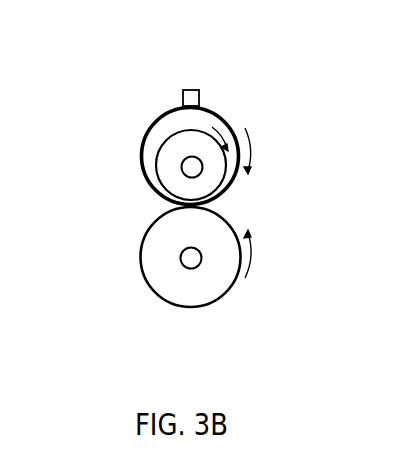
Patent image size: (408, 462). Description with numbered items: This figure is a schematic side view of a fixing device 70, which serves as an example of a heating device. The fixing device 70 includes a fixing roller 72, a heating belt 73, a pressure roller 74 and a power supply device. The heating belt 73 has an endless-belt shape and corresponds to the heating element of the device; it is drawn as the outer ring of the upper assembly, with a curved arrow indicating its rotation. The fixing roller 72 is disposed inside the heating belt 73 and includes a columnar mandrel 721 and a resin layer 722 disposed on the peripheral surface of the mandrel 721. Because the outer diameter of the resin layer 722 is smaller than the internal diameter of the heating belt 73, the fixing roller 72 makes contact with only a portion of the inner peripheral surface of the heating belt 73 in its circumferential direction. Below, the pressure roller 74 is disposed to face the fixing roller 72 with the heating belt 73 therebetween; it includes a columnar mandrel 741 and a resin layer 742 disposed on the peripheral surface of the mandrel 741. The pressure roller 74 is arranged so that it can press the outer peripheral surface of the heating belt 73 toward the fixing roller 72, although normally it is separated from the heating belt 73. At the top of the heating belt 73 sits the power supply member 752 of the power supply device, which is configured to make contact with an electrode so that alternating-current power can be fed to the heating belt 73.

The fixing device 70 is at (279, 82).
The fixing roller 72 is at (75, 122).
The mandrel 721 is at (181, 166).
The resin layer 722 is at (157, 146).
The heating belt 73 is at (218, 109).
The power supply member 752 is at (189, 89).
The pressure roller 74 is at (93, 307).
The mandrel 741 is at (181, 261).
The resin layer 742 is at (167, 299).